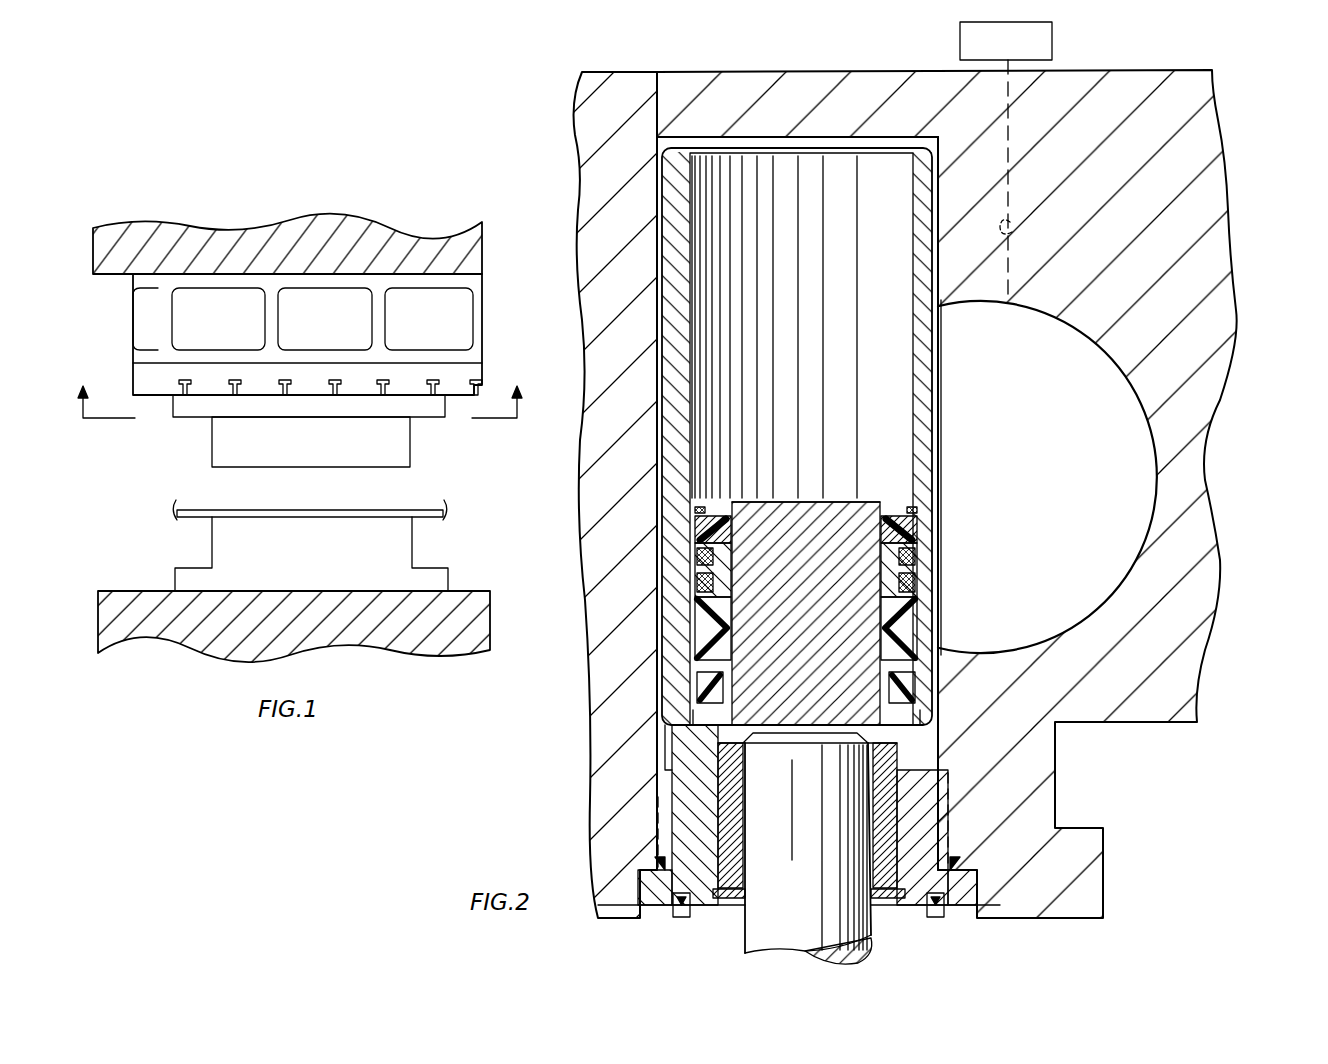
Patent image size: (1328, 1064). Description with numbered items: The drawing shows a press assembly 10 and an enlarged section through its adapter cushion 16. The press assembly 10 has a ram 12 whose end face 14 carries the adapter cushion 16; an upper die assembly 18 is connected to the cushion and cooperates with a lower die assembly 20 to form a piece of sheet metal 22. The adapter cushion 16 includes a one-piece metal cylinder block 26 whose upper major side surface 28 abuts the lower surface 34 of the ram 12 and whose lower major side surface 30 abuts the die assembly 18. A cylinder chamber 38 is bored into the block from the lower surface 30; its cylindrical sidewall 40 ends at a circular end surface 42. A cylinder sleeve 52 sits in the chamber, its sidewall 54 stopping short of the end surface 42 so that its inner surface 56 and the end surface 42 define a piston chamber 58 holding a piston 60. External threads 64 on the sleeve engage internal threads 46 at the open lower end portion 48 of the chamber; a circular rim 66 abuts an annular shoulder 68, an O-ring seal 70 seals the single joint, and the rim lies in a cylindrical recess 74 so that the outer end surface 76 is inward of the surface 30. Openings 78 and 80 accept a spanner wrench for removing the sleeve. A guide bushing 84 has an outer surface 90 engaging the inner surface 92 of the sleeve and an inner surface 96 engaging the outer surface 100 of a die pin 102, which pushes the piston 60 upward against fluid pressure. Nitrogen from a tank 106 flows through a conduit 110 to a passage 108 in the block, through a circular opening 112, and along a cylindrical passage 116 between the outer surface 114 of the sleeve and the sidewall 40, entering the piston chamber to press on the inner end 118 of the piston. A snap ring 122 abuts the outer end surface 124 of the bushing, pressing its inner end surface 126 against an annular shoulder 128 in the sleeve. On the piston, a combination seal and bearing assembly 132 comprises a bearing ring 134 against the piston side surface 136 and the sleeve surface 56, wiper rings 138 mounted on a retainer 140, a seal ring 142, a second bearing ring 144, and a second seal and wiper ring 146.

In FIG. 1, the press assembly 10 is at (52, 246).
In FIG. 1, the ram 12 is at (318, 240).
In FIG. 1, the end face 14 is at (150, 378).
In FIG. 1, the adapter cushion 16 is at (200, 405).
In FIG. 2, the adapter cushion 16 is at (551, 102).
In FIG. 1, the upper die assembly 18 is at (410, 440).
In FIG. 1, the lower die assembly 20 is at (212, 545).
In FIG. 1, the piece of sheet metal 22 is at (428, 520).
In FIG. 2, the one-piece cylinder block 26 is at (1224, 208).
In FIG. 1, the upper major side surface 28 is at (256, 392).
In FIG. 2, the upper major side surface 28 is at (1136, 70).
In FIG. 1, the lower major side surface 30 is at (342, 405).
In FIG. 2, the lower major side surface 30 is at (1045, 918).
In FIG. 1, the lower surface of the ram 34 is at (460, 398).
In FIG. 2, the cylinder chamber 38 is at (786, 137).
In FIG. 2, the cylindrical sidewall 40 is at (660, 290).
In FIG. 2, the circular end surface 42 is at (736, 138).
In FIG. 2, the internal threads 46 is at (665, 780).
In FIG. 2, the open lower end portion 48 is at (672, 757).
In FIG. 2, the cylinder sleeve 52 is at (936, 335).
In FIG. 2, the cylindrical sidewall of the sleeve 54 is at (925, 348).
In FIG. 2, the cylindrical inner surface 56 is at (910, 392).
In FIG. 2, the piston chamber 58 is at (877, 417).
In FIG. 2, the piston 60 is at (854, 500).
In FIG. 2, the external threads 64 is at (660, 800).
In FIG. 2, the circular rim 66 is at (975, 893).
In FIG. 2, the annular shoulder 68 is at (965, 860).
In FIG. 2, the O-ring seal 70 is at (655, 858).
In FIG. 2, the cylindrical recess 74 is at (605, 900).
In FIG. 2, the annular outer end surface 76 is at (714, 908).
In FIG. 2, the opening 78 is at (680, 905).
In FIG. 2, the opening 80 is at (940, 905).
In FIG. 2, the guide bushing 84 is at (904, 762).
In FIG. 2, the cylindrical outer surface of the guide bushing 90 is at (880, 810).
In FIG. 2, the cylindrical inner surface of the sleeve 92 is at (950, 800).
In FIG. 2, the cylindrical inner surface of the guide bushing 96 is at (740, 822).
In FIG. 2, the cylindrical outer surface of the die pin 100 is at (812, 936).
In FIG. 2, the die pin 102 is at (870, 925).
In FIG. 2, the tank 106 is at (1020, 52).
In FIG. 2, the passage 108 is at (1105, 483).
In FIG. 2, the conduit 110 is at (1012, 232).
In FIG. 2, the circular opening 112 is at (940, 645).
In FIG. 2, the cylindrical outer surface of the sleeve 114 is at (935, 497).
In FIG. 2, the cylindrical passage 116 is at (936, 196).
In FIG. 2, the inner end of the piston 118 is at (800, 500).
In FIG. 2, the snap ring 122 is at (747, 897).
In FIG. 2, the annular outer end surface of the guide bushing 124 is at (745, 880).
In FIG. 2, the annular inner end surface of the bushing 126 is at (726, 770).
In FIG. 2, the annular shoulder of the sleeve 128 is at (730, 726).
In FIG. 2, the combination seal and bearing assembly 132 is at (704, 500).
In FIG. 2, the bearing ring 134 is at (693, 522).
In FIG. 2, the cylindrical side surface of the piston 136 is at (730, 525).
In FIG. 2, the wiper rings 138 is at (693, 575).
In FIG. 2, the retainer 140 is at (730, 578).
In FIG. 2, the seal ring 142 is at (700, 630).
In FIG. 2, the second bearing ring 144 is at (700, 655).
In FIG. 2, the second seal and wiper ring 146 is at (705, 695).